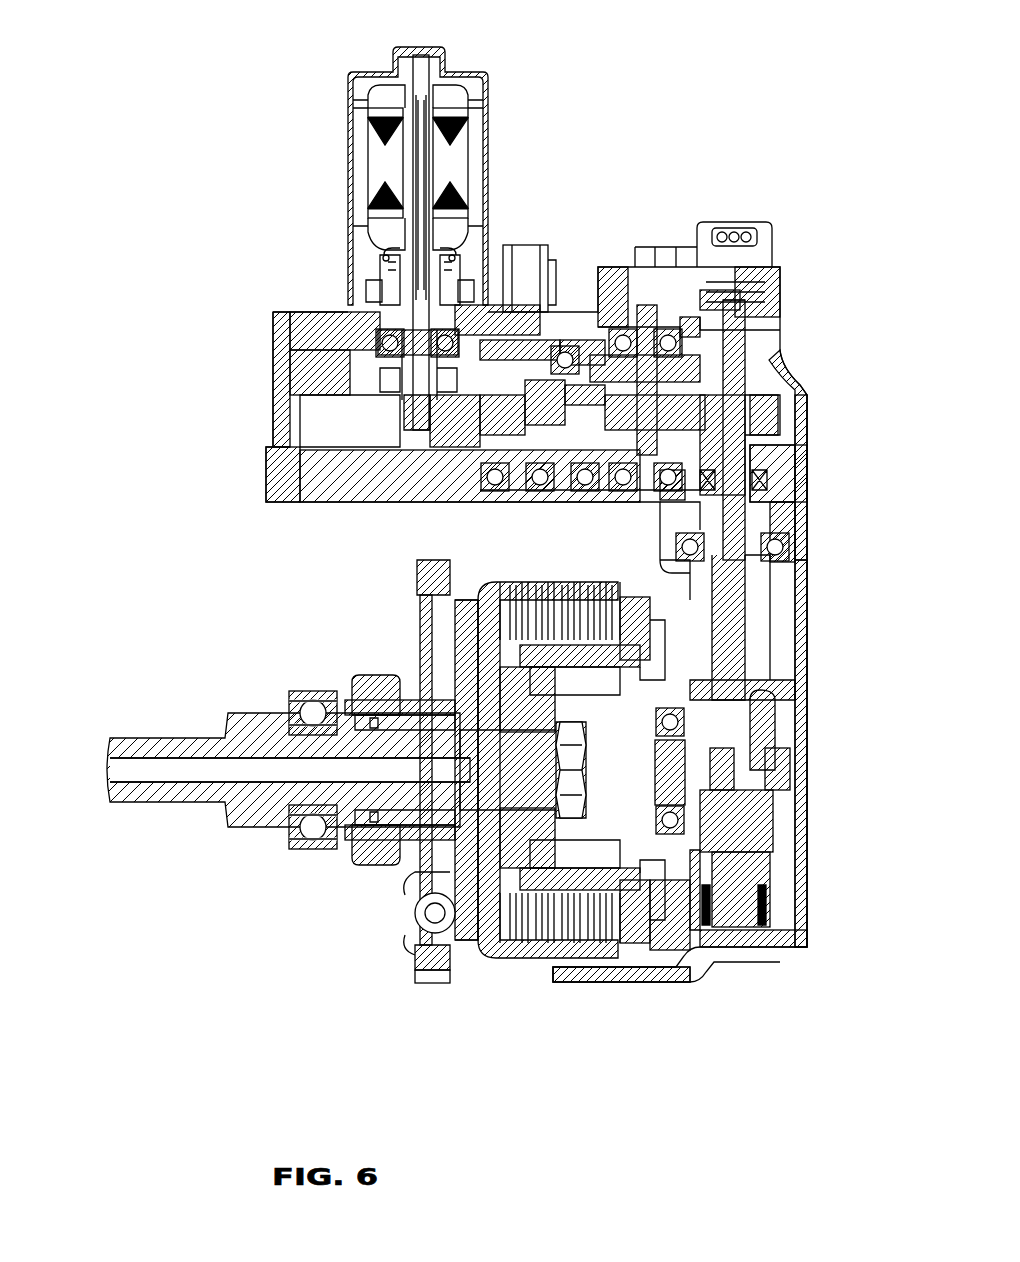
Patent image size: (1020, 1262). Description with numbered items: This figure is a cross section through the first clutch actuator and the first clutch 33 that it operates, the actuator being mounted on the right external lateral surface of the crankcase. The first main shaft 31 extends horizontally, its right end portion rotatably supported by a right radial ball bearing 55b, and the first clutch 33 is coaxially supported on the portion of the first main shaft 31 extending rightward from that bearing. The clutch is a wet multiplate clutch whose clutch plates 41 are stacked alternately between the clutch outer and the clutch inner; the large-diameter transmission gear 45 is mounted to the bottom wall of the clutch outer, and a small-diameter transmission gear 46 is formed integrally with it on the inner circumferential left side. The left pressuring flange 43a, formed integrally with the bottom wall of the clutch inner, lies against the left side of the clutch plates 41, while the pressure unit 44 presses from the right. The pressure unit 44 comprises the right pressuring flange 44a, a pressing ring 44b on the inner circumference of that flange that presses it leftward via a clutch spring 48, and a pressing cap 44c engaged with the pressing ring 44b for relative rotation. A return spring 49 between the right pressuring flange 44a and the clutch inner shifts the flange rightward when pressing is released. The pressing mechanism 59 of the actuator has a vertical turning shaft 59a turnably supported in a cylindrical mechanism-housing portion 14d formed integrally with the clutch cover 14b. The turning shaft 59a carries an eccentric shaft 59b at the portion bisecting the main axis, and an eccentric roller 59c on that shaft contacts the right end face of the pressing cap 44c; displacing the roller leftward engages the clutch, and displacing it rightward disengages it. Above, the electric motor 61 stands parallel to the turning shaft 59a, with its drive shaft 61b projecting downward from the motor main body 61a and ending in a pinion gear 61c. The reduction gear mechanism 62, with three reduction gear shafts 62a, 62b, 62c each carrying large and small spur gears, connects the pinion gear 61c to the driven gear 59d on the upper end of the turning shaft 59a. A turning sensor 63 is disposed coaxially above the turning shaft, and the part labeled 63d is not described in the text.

The electric motor 61 is at (460, 238).
The motor main body 61a is at (488, 95).
The drive shaft 61b is at (430, 245).
The pinion gear 61c is at (402, 414).
The reduction gear mechanism 62 is at (715, 368).
The reduction gear shaft 62a is at (493, 500).
The reduction gear shaft 62b is at (570, 500).
The reduction gear shaft 62c is at (642, 498).
The turning sensor 63 is at (772, 232).
The sensor housing 63d is at (800, 477).
The pressing mechanism 59 is at (774, 676).
The turning shaft 59a is at (750, 617).
The eccentric shaft 59b is at (772, 732).
The eccentric roller 59c is at (790, 776).
The driven gear 59d is at (782, 410).
The mechanism-housing portion 14d is at (803, 687).
The clutch cover 14b is at (595, 985).
The first main shaft 31 is at (175, 745).
The right radial ball bearing 55b is at (300, 692).
The small-diameter transmission gear 46 is at (372, 685).
The return spring 49 is at (603, 668).
The clutch spring 48 is at (602, 835).
The large-diameter transmission gear 45 is at (425, 985).
The left pressuring flange 43a is at (495, 955).
The clutch plates 41 is at (522, 948).
The first clutch 33 is at (650, 960).
The pressure unit 44 is at (737, 931).
The right pressuring flange 44a is at (640, 937).
The pressing ring 44b is at (762, 925).
The pressing cap 44c is at (705, 805).